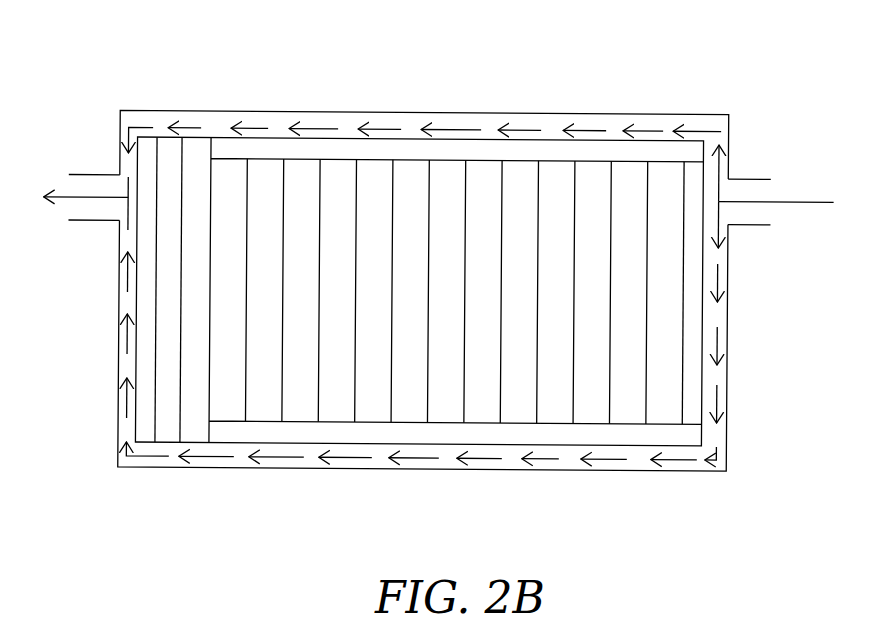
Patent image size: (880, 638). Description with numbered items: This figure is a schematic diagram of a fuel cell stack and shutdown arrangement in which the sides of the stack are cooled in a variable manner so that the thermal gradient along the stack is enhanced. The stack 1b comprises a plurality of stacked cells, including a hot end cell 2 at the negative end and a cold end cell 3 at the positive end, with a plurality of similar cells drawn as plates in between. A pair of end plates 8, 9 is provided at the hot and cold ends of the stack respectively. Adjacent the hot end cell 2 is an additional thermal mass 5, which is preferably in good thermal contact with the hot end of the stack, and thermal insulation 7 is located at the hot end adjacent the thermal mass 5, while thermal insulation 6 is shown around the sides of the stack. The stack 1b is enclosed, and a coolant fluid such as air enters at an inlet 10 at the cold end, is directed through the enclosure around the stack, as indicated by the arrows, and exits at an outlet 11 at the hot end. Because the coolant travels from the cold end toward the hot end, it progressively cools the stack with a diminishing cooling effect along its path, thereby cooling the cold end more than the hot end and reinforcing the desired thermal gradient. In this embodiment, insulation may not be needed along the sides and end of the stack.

The stack 1b is at (734, 80).
The hot end cell 2 is at (221, 405).
The cold end cell 3 is at (666, 396).
The thermal mass 5 is at (196, 150).
The thermal insulation 6 is at (482, 149).
The thermal insulation 7 is at (169, 149).
The end plate 8 is at (146, 152).
The end plate 9 is at (690, 365).
The inlet 10 is at (767, 210).
The outlet 11 is at (72, 210).